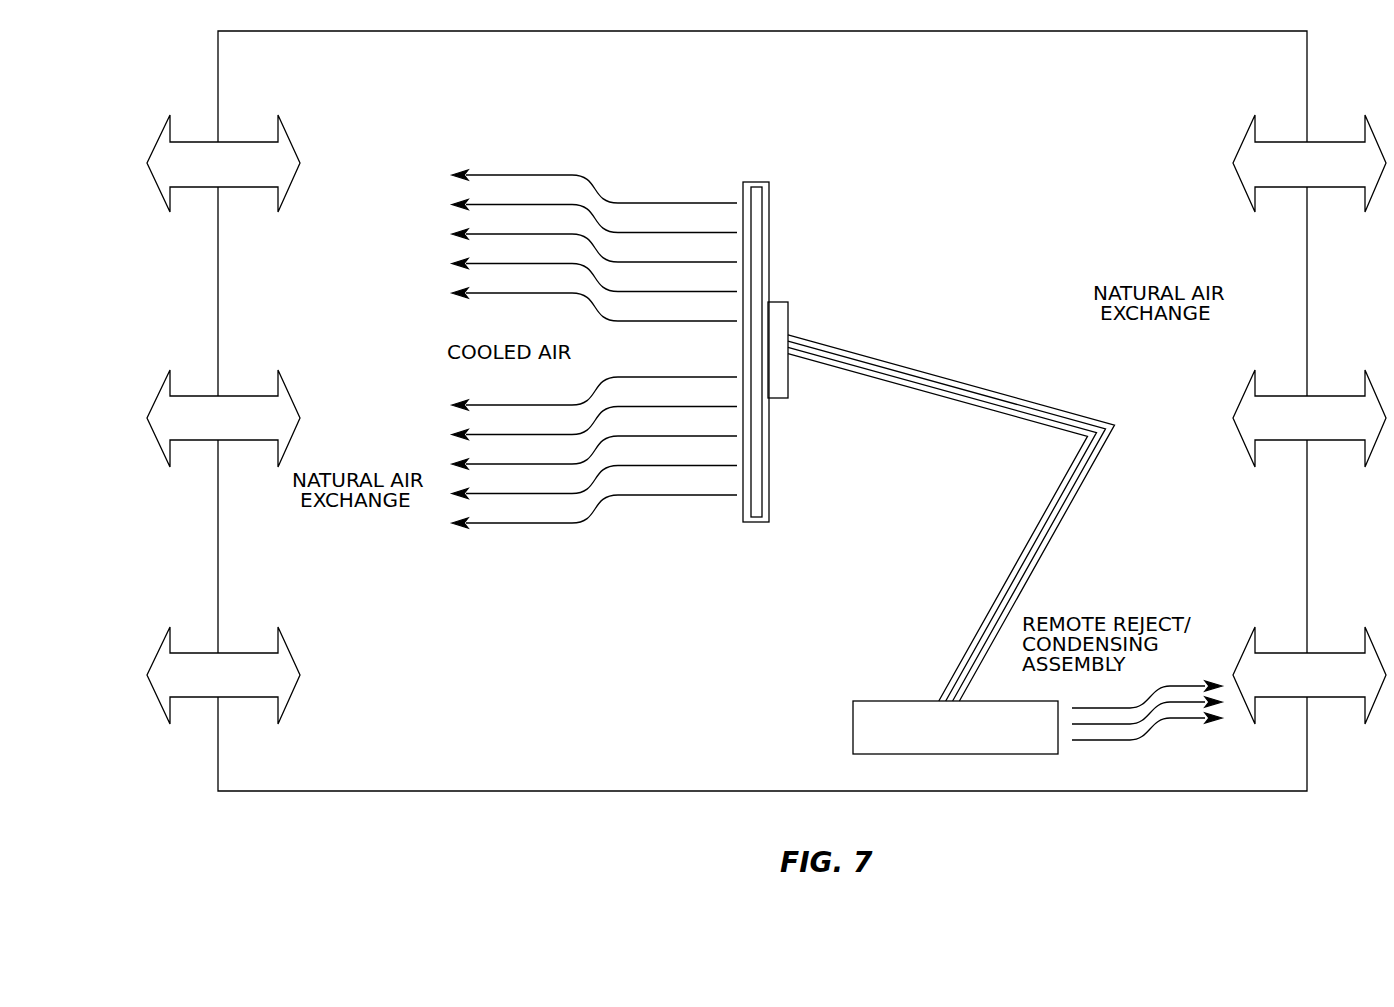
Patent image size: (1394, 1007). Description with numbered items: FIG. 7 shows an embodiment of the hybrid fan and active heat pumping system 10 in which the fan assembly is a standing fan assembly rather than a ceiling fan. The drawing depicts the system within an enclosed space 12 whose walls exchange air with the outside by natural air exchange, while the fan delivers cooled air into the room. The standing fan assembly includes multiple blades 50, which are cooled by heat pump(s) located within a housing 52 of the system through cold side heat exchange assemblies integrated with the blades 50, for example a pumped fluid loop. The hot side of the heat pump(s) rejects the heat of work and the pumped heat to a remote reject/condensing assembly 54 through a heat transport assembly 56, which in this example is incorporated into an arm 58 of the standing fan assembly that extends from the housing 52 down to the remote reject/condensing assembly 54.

The hybrid fan and active heat pumping system 10 is at (1008, 183).
The enclosure 12 is at (406, 91).
The blades 50 is at (755, 190).
The housing 52 is at (775, 302).
The remote reject/condensing assembly 54 is at (1033, 755).
The heat transport assembly 56 is at (1040, 415).
The arm 58 is at (998, 393).